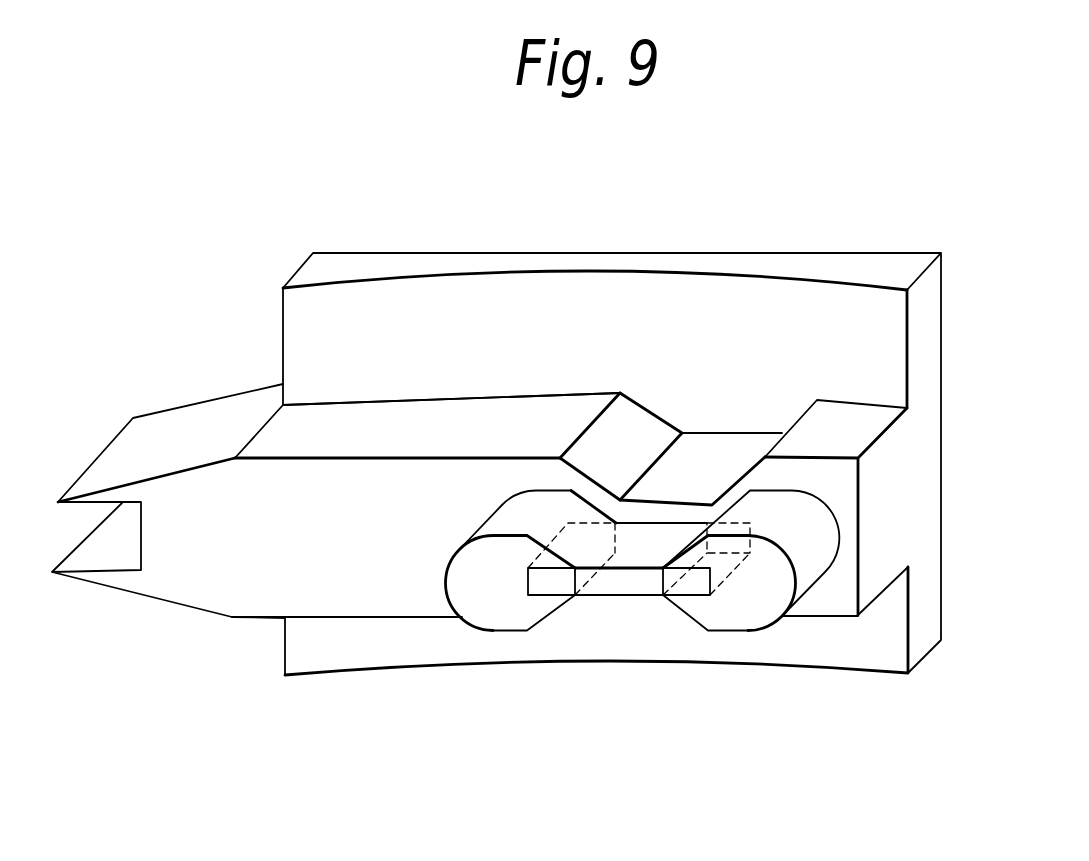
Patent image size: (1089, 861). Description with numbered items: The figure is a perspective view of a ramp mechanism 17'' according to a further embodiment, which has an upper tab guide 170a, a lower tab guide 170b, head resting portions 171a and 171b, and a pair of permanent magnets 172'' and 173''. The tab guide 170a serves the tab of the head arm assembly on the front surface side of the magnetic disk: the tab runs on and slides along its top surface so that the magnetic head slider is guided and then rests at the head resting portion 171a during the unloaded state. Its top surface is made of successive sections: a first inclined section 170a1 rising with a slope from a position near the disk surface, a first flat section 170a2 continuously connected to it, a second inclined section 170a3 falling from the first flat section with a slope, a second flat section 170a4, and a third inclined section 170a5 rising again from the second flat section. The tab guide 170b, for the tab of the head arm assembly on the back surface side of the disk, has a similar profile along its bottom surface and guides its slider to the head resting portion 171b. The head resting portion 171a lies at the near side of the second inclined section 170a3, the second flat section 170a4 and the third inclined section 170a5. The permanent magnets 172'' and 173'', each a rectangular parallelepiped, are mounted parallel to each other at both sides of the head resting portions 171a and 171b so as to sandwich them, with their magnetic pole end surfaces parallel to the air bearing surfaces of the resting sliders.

The ramp mechanism 17'' is at (659, 376).
The tab guide 170a is at (403, 420).
The first inclined section 170a1 is at (187, 433).
The first flat section 170a2 is at (503, 422).
The second inclined section 170a3 is at (637, 435).
The second flat section 170a4 is at (728, 453).
The third inclined section 170a5 is at (793, 417).
The tab guide 170b is at (150, 600).
The head resting portion 171a is at (632, 550).
The head resting portion 171b is at (639, 620).
The permanent magnet 172'' is at (519, 666).
The permanent magnet 173'' is at (713, 670).